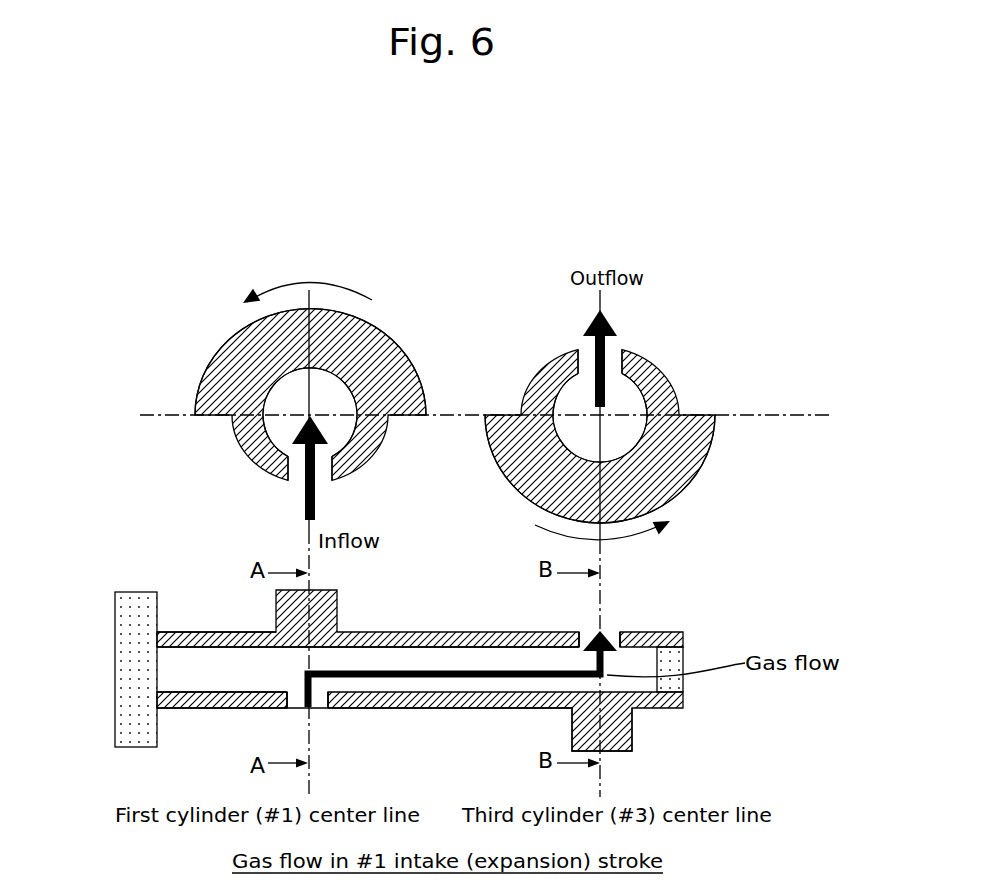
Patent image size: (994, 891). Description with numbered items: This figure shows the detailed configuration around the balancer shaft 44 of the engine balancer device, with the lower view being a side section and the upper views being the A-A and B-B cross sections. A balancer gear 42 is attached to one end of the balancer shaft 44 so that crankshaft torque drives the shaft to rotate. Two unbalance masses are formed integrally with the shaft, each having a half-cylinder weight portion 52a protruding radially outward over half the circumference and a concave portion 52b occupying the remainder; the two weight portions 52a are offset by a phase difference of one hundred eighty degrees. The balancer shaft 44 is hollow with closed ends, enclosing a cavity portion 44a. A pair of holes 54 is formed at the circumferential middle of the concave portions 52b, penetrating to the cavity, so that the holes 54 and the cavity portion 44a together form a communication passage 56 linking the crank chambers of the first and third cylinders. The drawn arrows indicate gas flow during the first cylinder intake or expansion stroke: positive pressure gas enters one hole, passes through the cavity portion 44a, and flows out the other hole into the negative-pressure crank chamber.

The balancer gear 42 is at (130, 677).
The balancer shaft 44 is at (228, 716).
The cavity portion 44a is at (280, 432).
The weight portion 52a is at (257, 372).
The concave portion 52b is at (368, 465).
The pair of holes 54 is at (598, 213).
The communication passage 56 is at (328, 413).